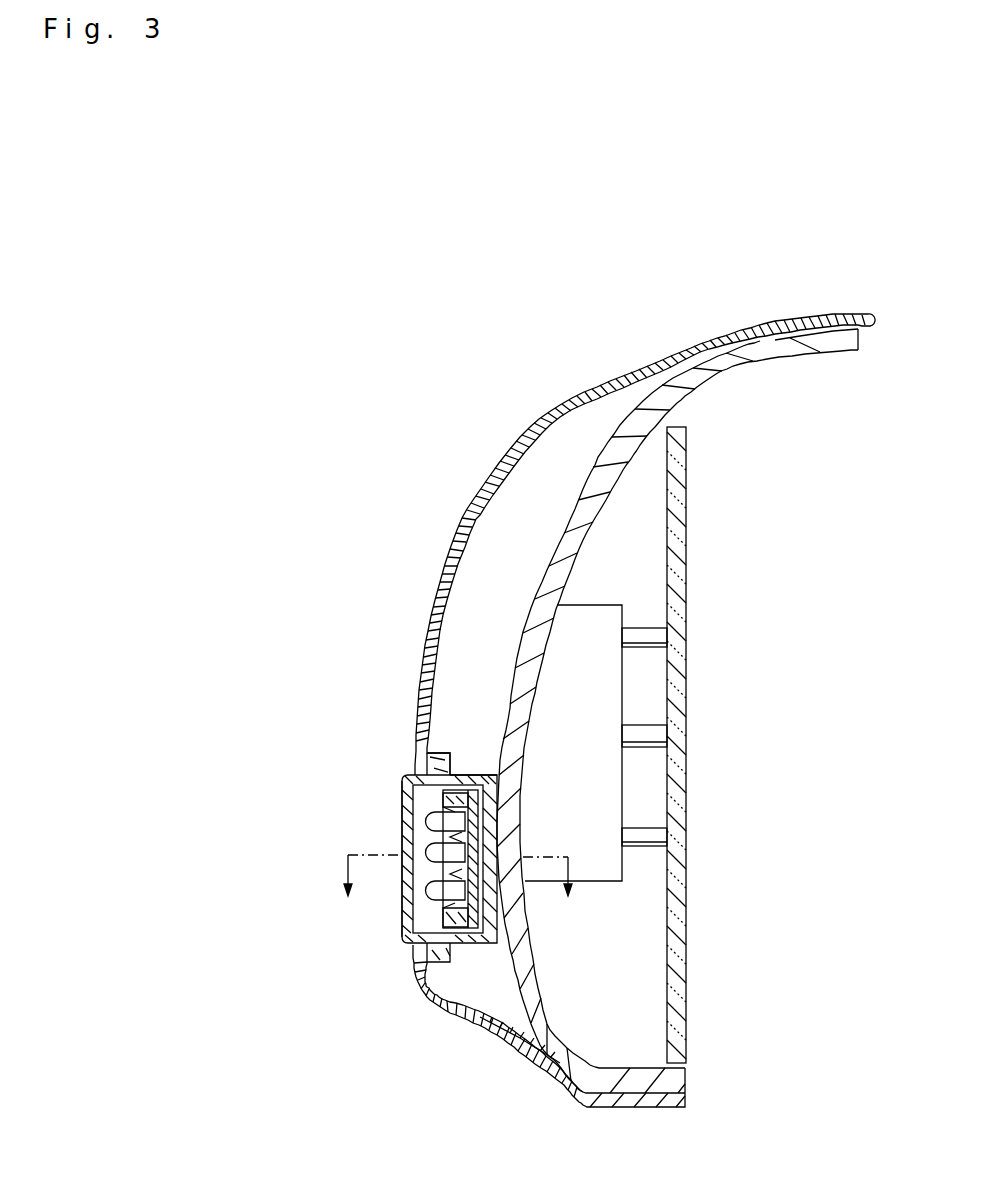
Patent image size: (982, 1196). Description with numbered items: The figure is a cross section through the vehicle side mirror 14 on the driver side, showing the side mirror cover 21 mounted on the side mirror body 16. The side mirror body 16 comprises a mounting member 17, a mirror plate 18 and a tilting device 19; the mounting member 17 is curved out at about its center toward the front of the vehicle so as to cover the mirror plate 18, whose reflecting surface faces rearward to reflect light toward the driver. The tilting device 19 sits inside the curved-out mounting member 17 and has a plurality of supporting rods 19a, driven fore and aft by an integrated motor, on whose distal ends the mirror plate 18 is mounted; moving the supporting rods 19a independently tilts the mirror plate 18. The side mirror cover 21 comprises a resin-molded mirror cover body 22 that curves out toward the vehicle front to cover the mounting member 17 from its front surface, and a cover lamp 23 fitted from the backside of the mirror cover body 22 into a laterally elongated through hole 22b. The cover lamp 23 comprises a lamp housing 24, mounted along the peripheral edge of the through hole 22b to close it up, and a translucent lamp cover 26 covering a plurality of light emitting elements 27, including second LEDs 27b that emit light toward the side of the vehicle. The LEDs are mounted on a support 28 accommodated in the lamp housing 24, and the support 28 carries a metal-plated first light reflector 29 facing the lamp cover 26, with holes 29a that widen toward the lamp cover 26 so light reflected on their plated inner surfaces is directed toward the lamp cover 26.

The vehicle side mirror 14 is at (275, 427).
The side mirror body 16 is at (800, 455).
The mounting member 17 is at (778, 359).
The mirror plate 18 is at (690, 526).
The tilting device 19 is at (623, 670).
The supporting rods 19a is at (647, 628).
The side mirror cover 21 is at (240, 690).
The mirror cover body 22 is at (420, 681).
The through hole 22b is at (398, 798).
The cover lamp 23 is at (383, 845).
The lamp housing 24 is at (464, 985).
The lamp cover 26 is at (440, 912).
The light emitting elements 27 is at (415, 875).
The second LED 27b is at (430, 930).
The support 28 is at (480, 917).
The first light reflector 29 is at (462, 775).
The holes 29a is at (438, 770).